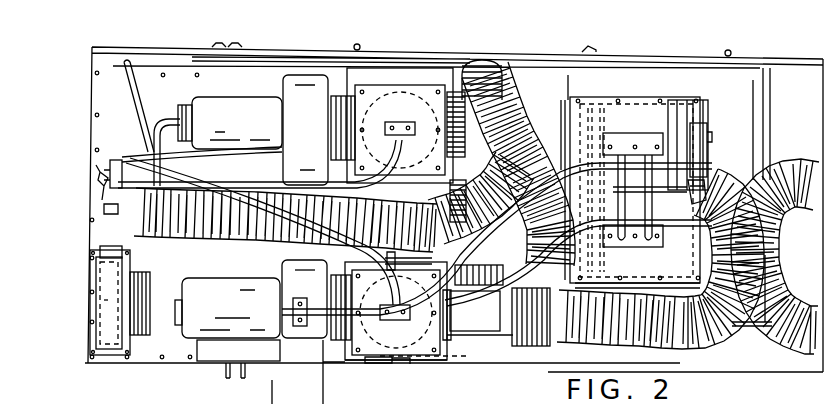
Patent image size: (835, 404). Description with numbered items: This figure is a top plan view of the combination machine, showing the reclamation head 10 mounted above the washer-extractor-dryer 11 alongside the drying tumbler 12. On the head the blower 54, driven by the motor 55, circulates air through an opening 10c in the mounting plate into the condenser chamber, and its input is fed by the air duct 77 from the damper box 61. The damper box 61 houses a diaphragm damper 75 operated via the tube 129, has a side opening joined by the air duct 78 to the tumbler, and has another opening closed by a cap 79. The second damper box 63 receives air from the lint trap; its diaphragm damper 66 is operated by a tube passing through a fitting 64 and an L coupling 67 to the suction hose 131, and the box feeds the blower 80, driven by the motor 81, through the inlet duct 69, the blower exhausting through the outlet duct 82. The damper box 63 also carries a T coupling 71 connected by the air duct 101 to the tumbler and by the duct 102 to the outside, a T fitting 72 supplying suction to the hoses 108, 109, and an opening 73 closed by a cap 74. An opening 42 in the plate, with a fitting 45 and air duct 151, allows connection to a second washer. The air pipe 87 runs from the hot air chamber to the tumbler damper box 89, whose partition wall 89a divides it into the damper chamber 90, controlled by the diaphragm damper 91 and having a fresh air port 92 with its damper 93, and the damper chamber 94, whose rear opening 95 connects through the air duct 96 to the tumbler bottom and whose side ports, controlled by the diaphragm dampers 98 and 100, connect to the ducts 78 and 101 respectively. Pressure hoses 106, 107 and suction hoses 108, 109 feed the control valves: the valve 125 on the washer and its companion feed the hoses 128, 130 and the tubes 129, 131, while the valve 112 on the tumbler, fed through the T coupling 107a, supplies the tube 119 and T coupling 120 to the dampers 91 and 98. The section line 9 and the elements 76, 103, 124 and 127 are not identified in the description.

The section line 9- 9 is at (343, 346).
The reclamation head 10 is at (140, 368).
The opening 10c is at (274, 174).
The washer-extractor-dryer 11 is at (212, 368).
The drying tumbler 12 is at (327, 397).
The opening 42 is at (92, 304).
The fitting 45 is at (108, 260).
The blower 54 is at (305, 130).
The motor 55 is at (230, 123).
The damper box 61 is at (447, 68).
The damper box 63 is at (437, 346).
The fitting 64 is at (389, 311).
The diaphragm damper 66 is at (415, 366).
The L coupling 67 is at (405, 314).
The inlet duct 69 is at (323, 342).
The T coupling 71 is at (478, 315).
The T fitting 72 is at (402, 258).
The opening 73 is at (380, 364).
The cap 74 is at (402, 364).
The diaphragm damper 75 is at (410, 84).
The terminal block 76 is at (418, 122).
The air duct 77 is at (345, 96).
The air duct 78 is at (512, 88).
The cap 79 is at (400, 136).
The blower 80 is at (304, 299).
The motor 81 is at (236, 288).
The outlet duct 82 is at (270, 370).
The air pipe 87 is at (233, 234).
The tumbler damper box 89 is at (649, 86).
The central partition wall 89a is at (639, 186).
The damper chamber 90 is at (684, 96).
The diaphragm damper 91 is at (593, 123).
The opening 92 is at (711, 137).
The diaphragm damper 93 is at (704, 118).
The damper chamber 94 is at (610, 349).
The opening 95 is at (654, 278).
The air duct 96 is at (702, 352).
The diaphragm damper 98 is at (587, 264).
The diaphragm damper 100 is at (670, 260).
The air duct 101 is at (515, 292).
The duct 102 is at (494, 266).
The hose elbow 103 is at (490, 58).
The pressure hose 106 is at (262, 310).
The pressure hose 107 is at (322, 314).
The T coupling 107a is at (708, 126).
The suction hose 108 is at (202, 156).
The suction hose 109 is at (546, 288).
The valve 112 is at (704, 182).
The tube 119 is at (646, 190).
The T coupling 120 is at (632, 136).
The tube fitting 124 is at (102, 211).
The valve 125 is at (103, 188).
The valve 127 is at (126, 150).
The hose 128 is at (162, 144).
The tube 129 is at (308, 182).
The hose 130 is at (137, 95).
The suction hose 131 is at (270, 272).
The air duct 151 is at (162, 258).